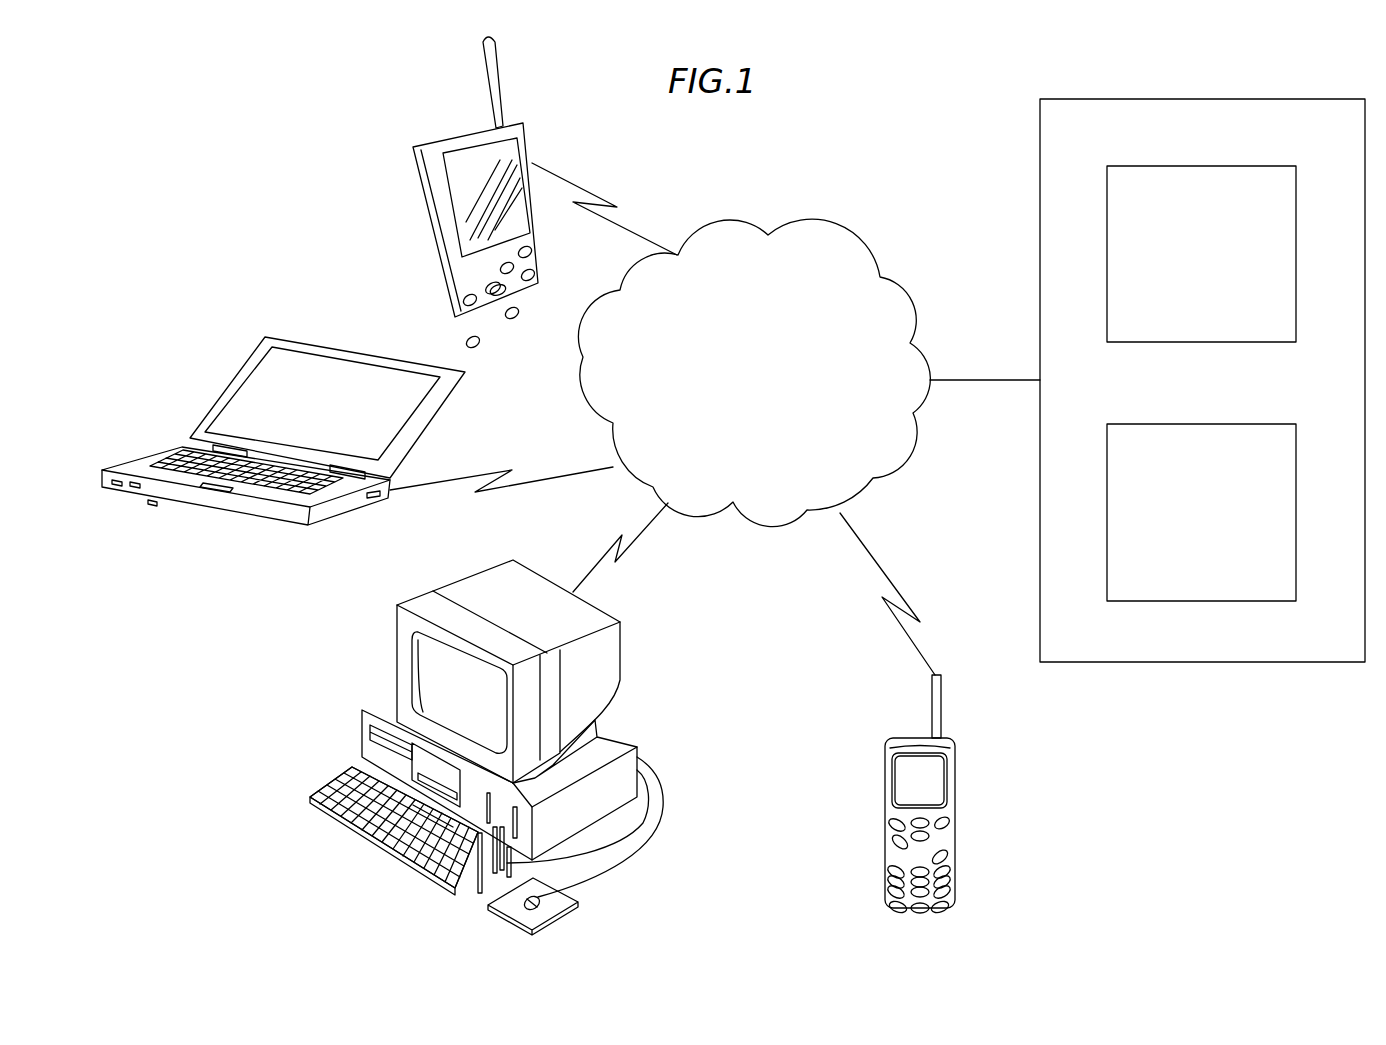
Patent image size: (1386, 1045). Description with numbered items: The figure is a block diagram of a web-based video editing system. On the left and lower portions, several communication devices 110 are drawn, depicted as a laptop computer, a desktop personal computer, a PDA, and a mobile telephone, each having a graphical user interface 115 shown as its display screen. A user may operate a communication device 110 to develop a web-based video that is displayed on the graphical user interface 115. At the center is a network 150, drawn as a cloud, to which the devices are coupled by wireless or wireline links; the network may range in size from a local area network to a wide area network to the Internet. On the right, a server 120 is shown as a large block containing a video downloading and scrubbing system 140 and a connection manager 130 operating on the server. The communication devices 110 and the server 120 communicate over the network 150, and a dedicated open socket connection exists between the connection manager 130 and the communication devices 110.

The communication devices 110 is at (447, 140).
The graphical user interface 115 is at (503, 163).
The server 120 is at (1200, 97).
The connection manager 130 is at (1202, 424).
The video downloading and scrubbing system 140 is at (1202, 165).
The network 150 is at (808, 220).